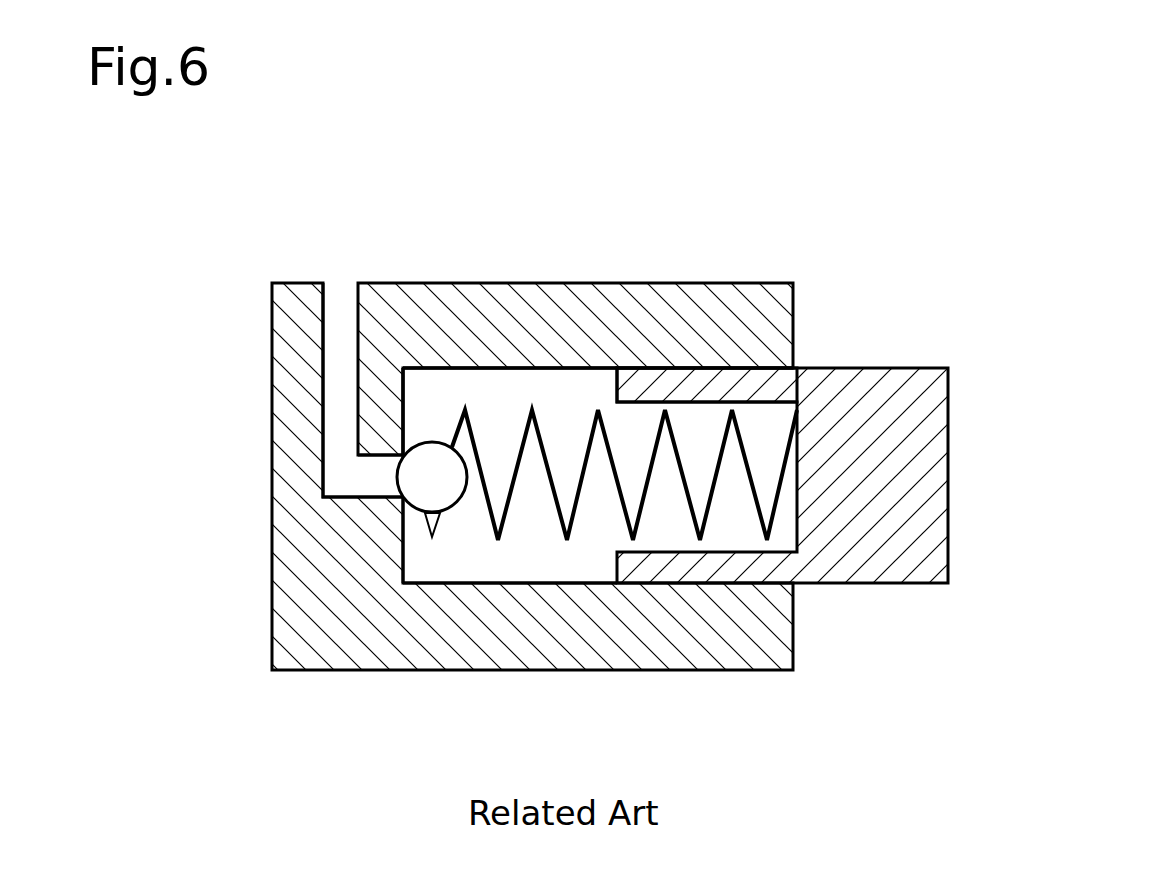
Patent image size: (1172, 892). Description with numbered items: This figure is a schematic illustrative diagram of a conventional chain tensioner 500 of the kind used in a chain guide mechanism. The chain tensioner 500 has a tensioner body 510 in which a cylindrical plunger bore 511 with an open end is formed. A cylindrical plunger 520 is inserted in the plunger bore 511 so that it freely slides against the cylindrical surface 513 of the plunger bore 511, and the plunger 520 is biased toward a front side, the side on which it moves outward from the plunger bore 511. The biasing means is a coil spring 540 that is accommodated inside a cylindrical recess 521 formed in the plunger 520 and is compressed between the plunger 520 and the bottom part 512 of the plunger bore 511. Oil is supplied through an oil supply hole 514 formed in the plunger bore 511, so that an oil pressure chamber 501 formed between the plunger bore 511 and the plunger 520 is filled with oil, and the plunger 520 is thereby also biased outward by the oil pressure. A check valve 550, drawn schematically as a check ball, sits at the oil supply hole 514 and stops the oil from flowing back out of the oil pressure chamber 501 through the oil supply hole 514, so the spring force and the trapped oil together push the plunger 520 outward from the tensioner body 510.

The chain tensioner 500 is at (925, 180).
The oil pressure chamber 501 is at (530, 518).
The tensioner body 510 is at (443, 637).
The plunger bore 511 is at (608, 170).
The bottom part 512 is at (405, 402).
The cylindrical surface 513 is at (594, 370).
The oil supply hole 514 is at (341, 262).
The plunger 520 is at (923, 512).
The cylindrical recess 521 is at (724, 402).
The coil spring 540 is at (713, 493).
The check valve 550 is at (396, 472).